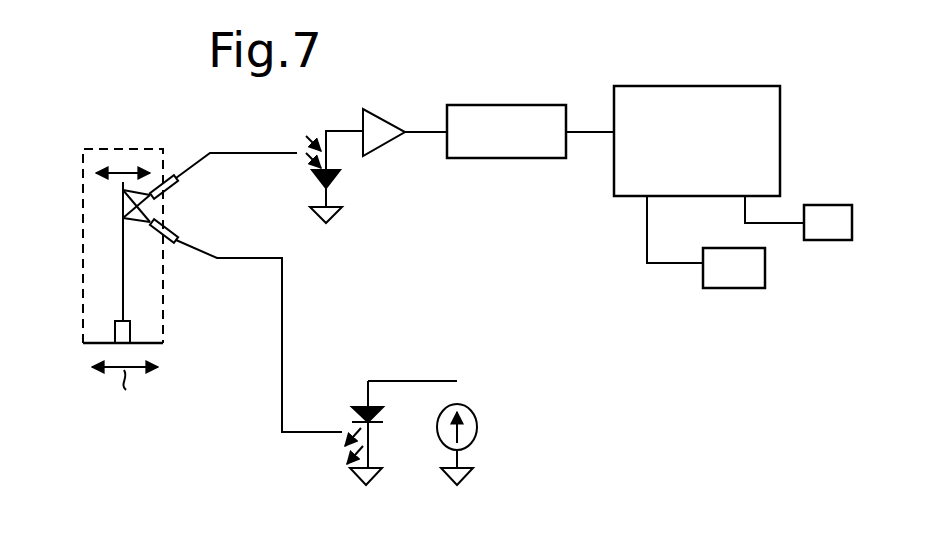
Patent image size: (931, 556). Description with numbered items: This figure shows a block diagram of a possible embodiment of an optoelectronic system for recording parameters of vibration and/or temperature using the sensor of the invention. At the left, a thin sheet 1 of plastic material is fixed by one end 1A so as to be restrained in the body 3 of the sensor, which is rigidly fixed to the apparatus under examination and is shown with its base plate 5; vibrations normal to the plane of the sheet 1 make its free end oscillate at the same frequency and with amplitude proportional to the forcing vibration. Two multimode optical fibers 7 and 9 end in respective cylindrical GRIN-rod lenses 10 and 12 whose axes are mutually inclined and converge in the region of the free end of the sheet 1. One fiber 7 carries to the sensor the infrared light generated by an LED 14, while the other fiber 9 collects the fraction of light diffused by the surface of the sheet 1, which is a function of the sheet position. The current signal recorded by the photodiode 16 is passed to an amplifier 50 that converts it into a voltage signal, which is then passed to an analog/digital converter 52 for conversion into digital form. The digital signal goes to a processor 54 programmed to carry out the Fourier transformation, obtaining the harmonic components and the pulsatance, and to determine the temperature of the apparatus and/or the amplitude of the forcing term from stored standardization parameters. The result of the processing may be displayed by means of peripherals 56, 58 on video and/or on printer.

The thin sheet 1 is at (122, 245).
The end of the sheet 1A is at (130, 337).
The body of the sensor 3 is at (83, 277).
The base plate 5 is at (102, 343).
The multimode optical fiber 7 is at (217, 256).
The multimode optical fiber 9 is at (212, 156).
The cylindrical lens 10 is at (168, 236).
The cylindrical lens 12 is at (170, 185).
The LED 14 is at (384, 447).
The photodiode 16 is at (342, 201).
The amplifier 50 is at (385, 137).
The analog/digital converter 52 is at (545, 155).
The processor 54 is at (625, 190).
The peripheral 56 is at (745, 283).
The peripheral 58 is at (828, 210).